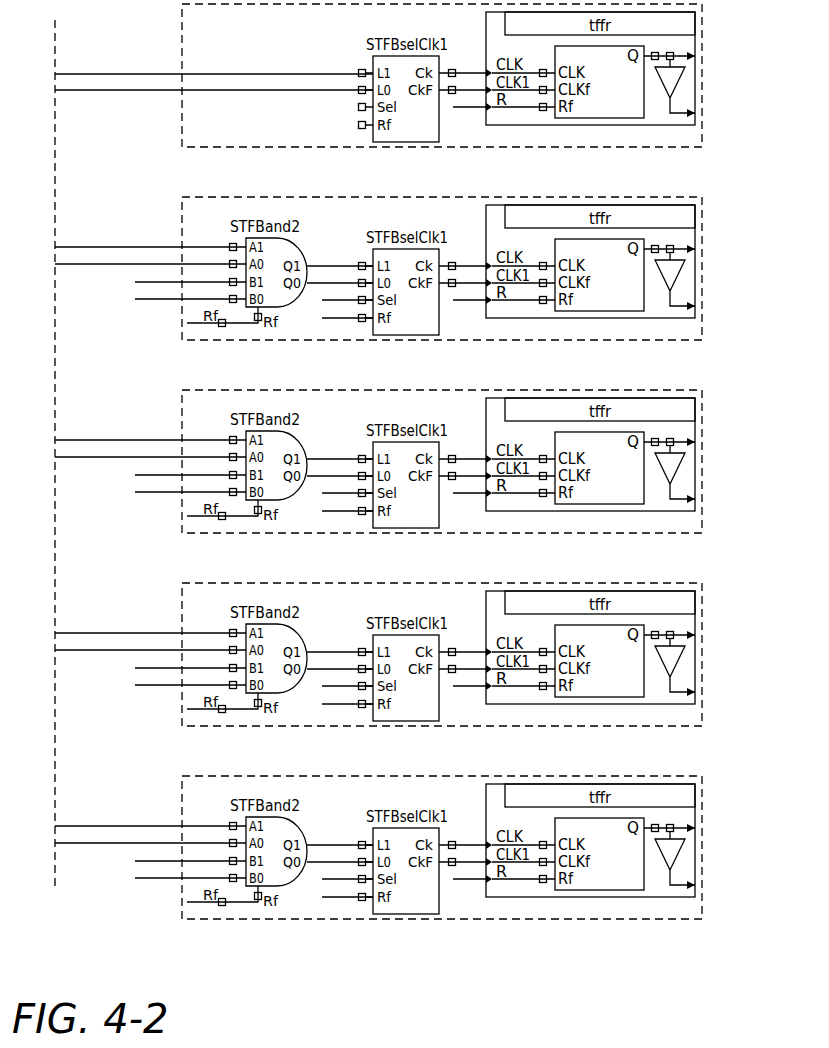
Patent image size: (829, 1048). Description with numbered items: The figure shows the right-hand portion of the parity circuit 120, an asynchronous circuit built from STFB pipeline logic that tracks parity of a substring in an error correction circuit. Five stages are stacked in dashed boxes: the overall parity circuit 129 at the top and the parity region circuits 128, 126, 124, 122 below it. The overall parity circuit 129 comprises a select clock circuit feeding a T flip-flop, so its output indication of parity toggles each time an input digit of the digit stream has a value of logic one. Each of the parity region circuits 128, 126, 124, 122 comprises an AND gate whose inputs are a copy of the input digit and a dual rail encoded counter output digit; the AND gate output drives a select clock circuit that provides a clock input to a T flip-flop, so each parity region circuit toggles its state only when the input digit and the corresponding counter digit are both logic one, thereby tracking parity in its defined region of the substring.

The parity circuit 120 is at (141, 34).
The overall parity circuit 129 is at (703, 75).
The parity region circuit 128 is at (703, 268).
The parity region circuit 126 is at (703, 461).
The parity region circuit 124 is at (703, 654).
The parity region circuit 122 is at (703, 847).